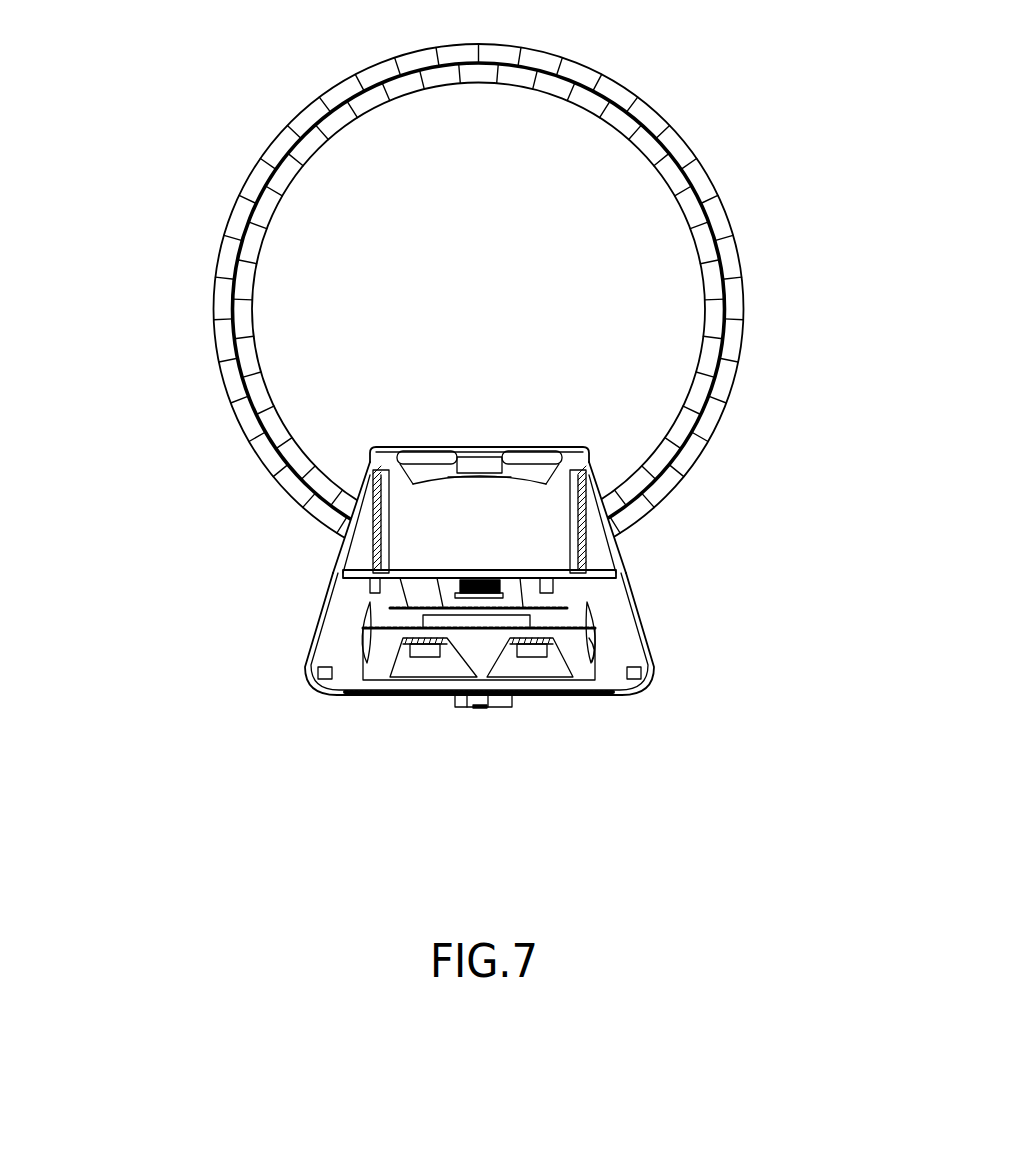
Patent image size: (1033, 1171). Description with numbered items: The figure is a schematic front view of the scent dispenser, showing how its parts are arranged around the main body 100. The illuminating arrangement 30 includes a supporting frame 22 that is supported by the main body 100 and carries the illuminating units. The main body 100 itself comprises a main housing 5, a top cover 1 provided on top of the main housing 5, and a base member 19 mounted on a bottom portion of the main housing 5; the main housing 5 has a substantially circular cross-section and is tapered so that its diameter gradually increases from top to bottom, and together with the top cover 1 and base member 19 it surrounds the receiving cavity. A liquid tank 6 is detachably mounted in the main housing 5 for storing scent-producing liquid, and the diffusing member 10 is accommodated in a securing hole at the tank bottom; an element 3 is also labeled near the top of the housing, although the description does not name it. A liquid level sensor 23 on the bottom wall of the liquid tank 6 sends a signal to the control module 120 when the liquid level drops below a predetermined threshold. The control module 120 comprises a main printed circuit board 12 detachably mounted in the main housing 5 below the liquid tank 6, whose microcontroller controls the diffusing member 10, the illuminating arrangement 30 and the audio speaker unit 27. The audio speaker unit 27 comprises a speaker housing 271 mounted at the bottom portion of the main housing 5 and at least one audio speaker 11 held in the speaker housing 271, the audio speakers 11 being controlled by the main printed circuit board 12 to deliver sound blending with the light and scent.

The main body 100 is at (442, 577).
The illuminating arrangement 30 is at (471, 298).
The supporting frame 22 is at (243, 143).
The top cover 1 is at (545, 450).
The sensor module 3 is at (417, 487).
The main housing 5 is at (620, 553).
The liquid tank 6 is at (380, 517).
The diffusing member 10 is at (480, 578).
The main printed circuit board 12 is at (488, 600).
The control module 120 is at (386, 614).
The liquid level sensor 23 is at (345, 572).
The audio speaker unit 27 is at (612, 605).
The speaker housing 271 is at (593, 643).
The audio speakers 11 is at (403, 653).
The base member 19 is at (595, 697).